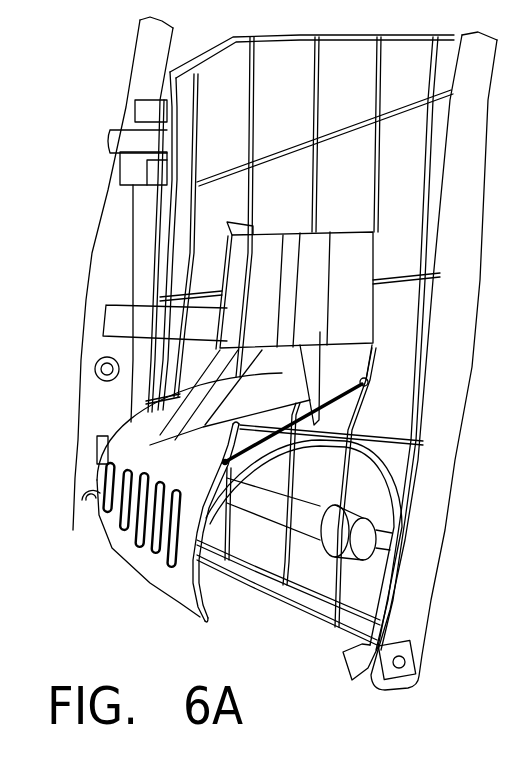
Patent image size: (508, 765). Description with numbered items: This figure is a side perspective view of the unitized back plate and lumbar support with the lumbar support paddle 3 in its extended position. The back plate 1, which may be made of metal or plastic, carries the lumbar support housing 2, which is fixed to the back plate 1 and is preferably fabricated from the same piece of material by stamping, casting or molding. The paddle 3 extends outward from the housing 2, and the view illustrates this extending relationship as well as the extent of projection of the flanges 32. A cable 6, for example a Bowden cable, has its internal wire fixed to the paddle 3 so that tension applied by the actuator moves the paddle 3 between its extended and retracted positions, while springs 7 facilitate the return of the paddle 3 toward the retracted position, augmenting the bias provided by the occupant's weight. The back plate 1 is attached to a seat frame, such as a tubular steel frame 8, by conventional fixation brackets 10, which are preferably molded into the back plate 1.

The back plate 1 is at (410, 107).
The lumbar support housing 2 is at (346, 233).
The lumbar support paddle 3 is at (140, 557).
The cable 6 is at (228, 560).
The springs 7 is at (330, 407).
The tubular steel frame 8 is at (142, 57).
The fixation brackets 10 is at (125, 182).
The flanges 32 is at (284, 374).